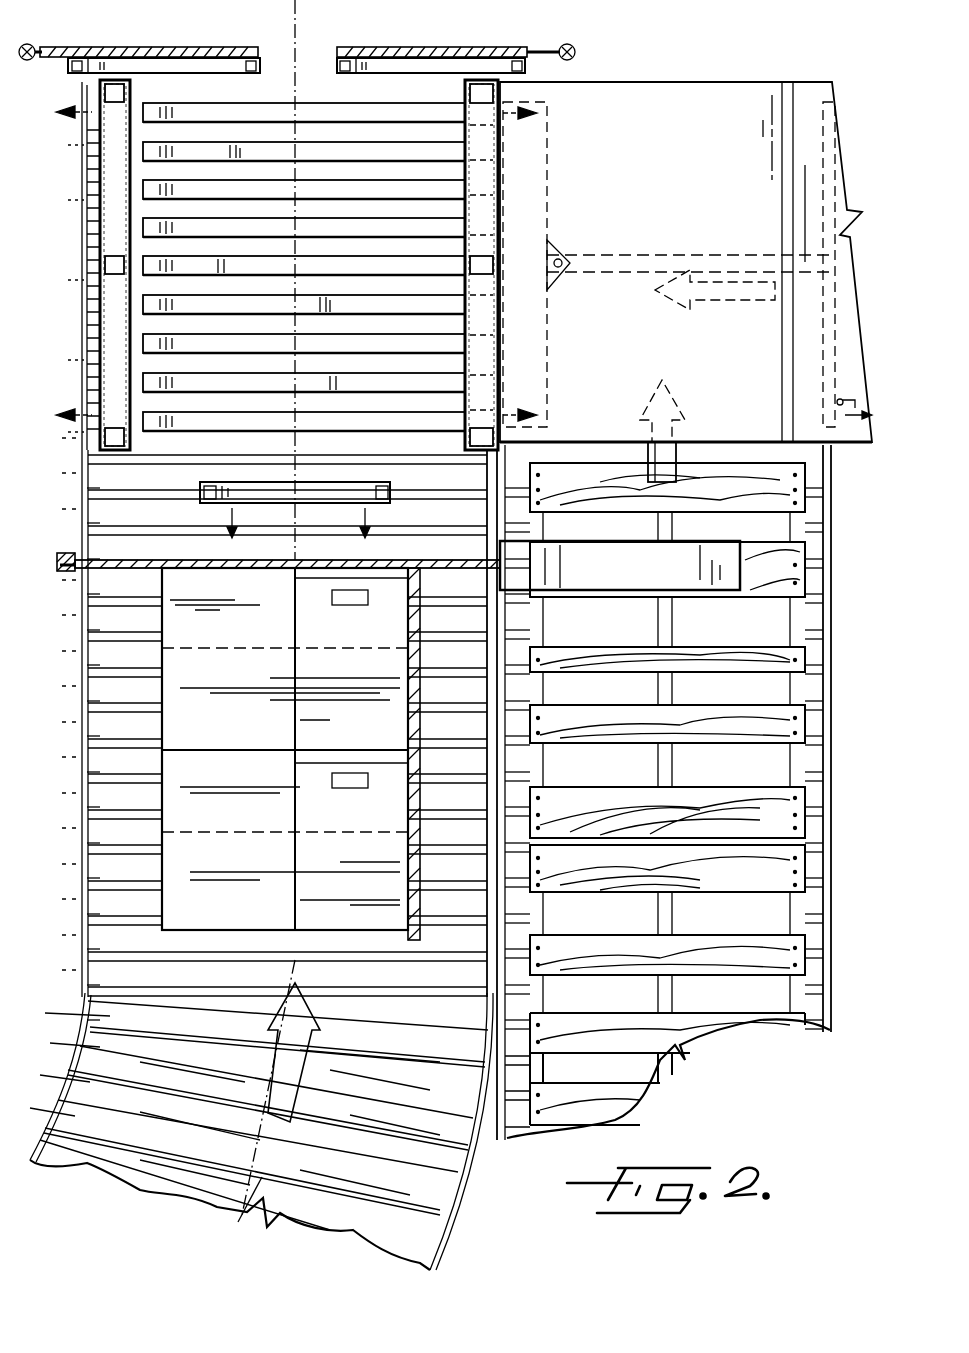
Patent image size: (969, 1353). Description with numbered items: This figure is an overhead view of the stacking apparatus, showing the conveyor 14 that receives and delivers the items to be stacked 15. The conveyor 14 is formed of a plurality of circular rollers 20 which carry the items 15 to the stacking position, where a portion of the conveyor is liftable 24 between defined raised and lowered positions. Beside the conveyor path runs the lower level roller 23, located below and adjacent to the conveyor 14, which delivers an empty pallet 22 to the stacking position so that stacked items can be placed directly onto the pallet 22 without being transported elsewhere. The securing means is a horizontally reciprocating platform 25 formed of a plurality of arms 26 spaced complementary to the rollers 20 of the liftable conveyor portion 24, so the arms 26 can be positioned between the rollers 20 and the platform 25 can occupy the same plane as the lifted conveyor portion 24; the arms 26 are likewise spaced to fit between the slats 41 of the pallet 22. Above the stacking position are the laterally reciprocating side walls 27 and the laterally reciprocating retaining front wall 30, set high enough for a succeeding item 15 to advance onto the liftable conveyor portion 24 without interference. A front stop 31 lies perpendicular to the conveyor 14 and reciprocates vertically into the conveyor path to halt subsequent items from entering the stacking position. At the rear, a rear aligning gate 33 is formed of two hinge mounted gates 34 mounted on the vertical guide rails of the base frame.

The conveyor 14 is at (72, 670).
The item to be stacked 15 is at (190, 890).
The circular rollers 20 is at (100, 141).
The pallet 22 is at (702, 650).
The lower level roller 23 is at (826, 830).
The liftable conveyor portion 24 is at (100, 192).
The horizontally reciprocating platform 25 is at (560, 166).
The arms 26 is at (276, 103).
The laterally reciprocating side walls 27 is at (484, 130).
The laterally reciprocating retaining front wall 30 is at (272, 456).
The front stop 31 is at (122, 574).
The rear aligning gate 33 is at (297, 36).
The hinge mounted gates 34 is at (192, 46).
The slats 41 is at (778, 725).